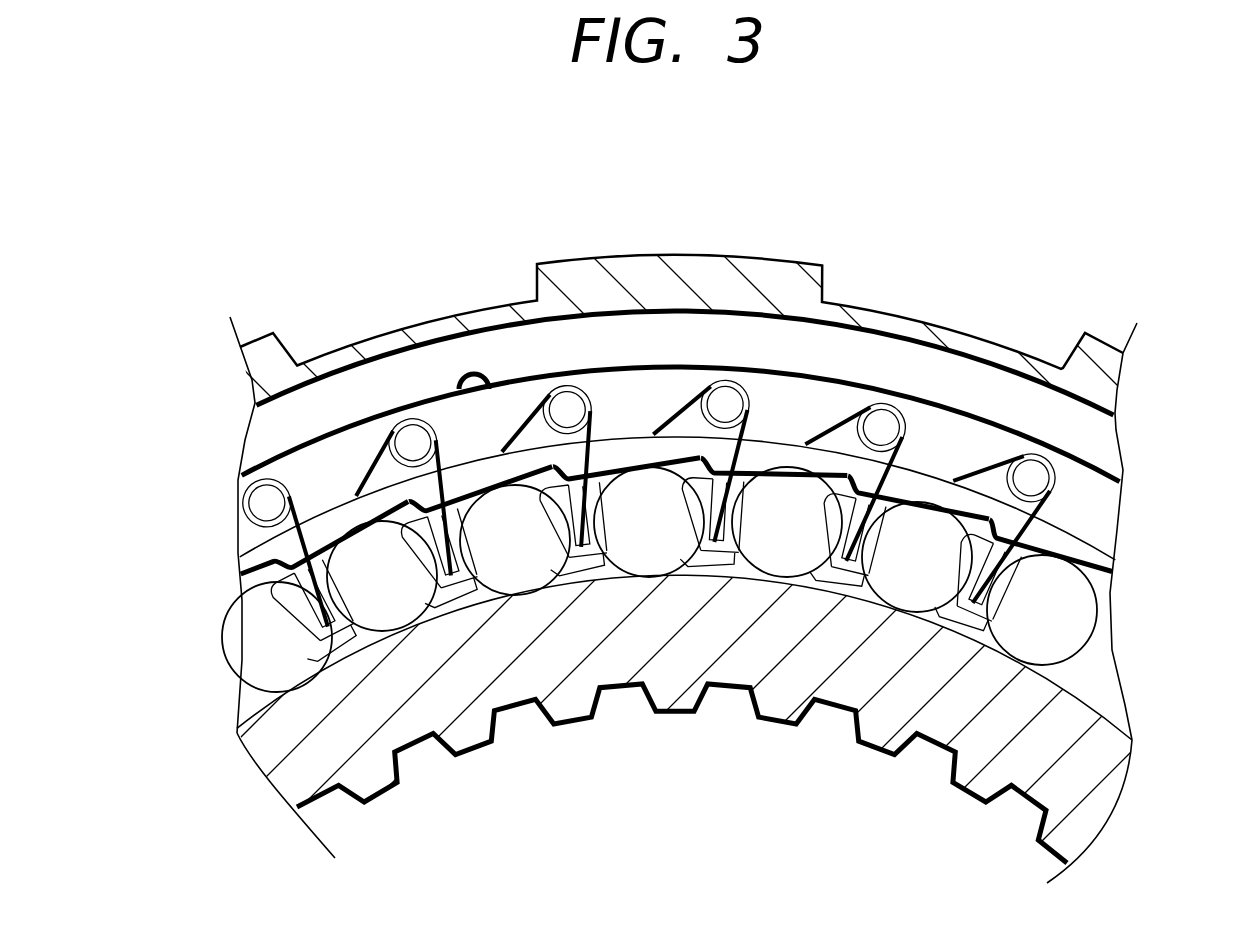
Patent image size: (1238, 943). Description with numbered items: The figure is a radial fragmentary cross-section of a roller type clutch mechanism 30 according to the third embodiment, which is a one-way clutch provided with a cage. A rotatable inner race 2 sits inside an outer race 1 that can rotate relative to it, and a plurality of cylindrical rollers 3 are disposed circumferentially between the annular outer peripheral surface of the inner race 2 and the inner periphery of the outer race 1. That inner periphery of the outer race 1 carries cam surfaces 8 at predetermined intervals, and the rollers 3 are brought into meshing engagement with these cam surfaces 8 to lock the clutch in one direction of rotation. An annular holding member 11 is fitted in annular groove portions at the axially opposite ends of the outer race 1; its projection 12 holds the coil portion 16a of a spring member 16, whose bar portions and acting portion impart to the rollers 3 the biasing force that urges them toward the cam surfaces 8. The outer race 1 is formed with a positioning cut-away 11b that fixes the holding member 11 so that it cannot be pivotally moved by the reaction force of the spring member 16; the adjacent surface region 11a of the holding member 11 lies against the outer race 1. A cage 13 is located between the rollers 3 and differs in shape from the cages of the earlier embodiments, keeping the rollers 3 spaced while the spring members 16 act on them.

The roller type clutch mechanism 30 is at (440, 218).
The outer race 1 is at (880, 323).
The inner race 2 is at (668, 677).
The cylindrical rollers 3 is at (1078, 608).
The cam surfaces 8 is at (726, 669).
The annular holding member 11 is at (1097, 490).
The inner peripheral surface of ring member 11a is at (328, 507).
The positioning cut-away 11b is at (457, 388).
The projection 12 is at (1037, 467).
The cage 13 is at (965, 620).
The spring member 16 is at (727, 422).
The coil portion 16a is at (707, 398).